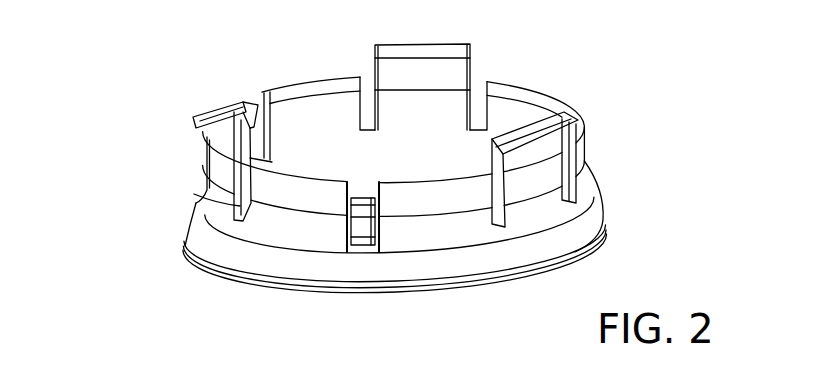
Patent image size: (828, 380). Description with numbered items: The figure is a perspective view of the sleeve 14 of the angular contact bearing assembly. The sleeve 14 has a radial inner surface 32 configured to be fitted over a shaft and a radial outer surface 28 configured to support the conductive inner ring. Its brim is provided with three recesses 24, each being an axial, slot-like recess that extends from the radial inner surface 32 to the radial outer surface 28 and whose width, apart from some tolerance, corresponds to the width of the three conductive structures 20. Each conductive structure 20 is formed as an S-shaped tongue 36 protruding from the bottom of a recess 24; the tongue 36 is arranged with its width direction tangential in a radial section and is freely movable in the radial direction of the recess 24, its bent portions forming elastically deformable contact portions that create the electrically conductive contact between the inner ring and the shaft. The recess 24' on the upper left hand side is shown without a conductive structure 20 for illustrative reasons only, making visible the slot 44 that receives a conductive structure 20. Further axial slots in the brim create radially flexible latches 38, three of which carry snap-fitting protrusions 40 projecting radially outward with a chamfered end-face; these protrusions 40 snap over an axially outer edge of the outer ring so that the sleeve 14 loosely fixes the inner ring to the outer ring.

The sleeve 14 is at (196, 203).
The conductive structure 20 is at (347, 250).
The recess 24 is at (397, 257).
The recess 24' is at (177, 159).
The radial outer surface 28 is at (553, 203).
The radial inner surface 32 is at (437, 134).
The tongue 36 is at (351, 223).
The latch 38 is at (542, 167).
The snap-fitting protrusion 40 is at (582, 150).
The slot 44 is at (271, 142).